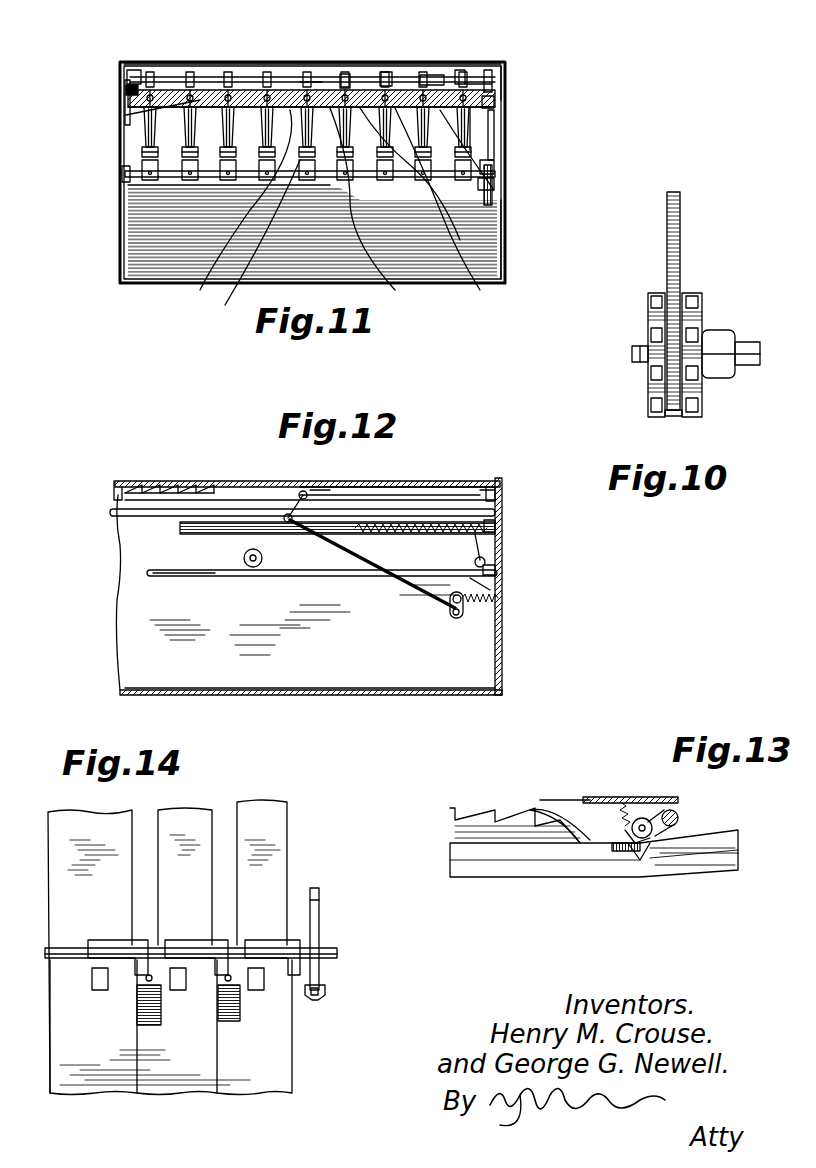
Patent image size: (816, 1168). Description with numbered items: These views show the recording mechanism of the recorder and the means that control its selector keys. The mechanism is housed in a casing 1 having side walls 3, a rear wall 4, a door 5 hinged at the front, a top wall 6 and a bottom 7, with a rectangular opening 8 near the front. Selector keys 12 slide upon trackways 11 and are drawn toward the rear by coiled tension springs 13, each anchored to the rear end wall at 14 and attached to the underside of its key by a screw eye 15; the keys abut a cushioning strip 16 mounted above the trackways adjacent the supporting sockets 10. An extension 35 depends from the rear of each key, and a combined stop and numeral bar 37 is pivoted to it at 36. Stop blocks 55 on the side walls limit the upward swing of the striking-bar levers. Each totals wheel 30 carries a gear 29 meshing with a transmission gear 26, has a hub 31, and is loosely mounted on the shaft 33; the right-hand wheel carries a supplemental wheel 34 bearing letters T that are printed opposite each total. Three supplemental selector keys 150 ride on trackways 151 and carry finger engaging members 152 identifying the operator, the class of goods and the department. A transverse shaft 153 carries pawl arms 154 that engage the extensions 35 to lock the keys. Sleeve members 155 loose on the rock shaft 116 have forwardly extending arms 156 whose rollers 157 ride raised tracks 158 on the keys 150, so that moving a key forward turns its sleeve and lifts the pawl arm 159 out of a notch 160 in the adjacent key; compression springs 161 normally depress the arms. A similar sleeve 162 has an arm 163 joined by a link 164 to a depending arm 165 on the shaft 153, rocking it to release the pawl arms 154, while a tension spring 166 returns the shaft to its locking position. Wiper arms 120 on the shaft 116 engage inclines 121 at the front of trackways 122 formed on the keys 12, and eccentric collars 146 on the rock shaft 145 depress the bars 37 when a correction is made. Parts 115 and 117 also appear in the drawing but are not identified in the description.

In FIG. 11, the casing 1 is at (128, 283).
In FIG. 12, the casing 1 is at (368, 696).
In FIG. 13, the casing 1 is at (590, 798).
In FIG. 11, the side walls 3 is at (126, 226).
In FIG. 12, the side walls 3 is at (124, 632).
In FIG. 12, the rear wall 4 is at (504, 682).
In FIG. 11, the door 5 is at (503, 248).
In FIG. 11, the top wall 6 is at (190, 89).
In FIG. 12, the top wall 6 is at (275, 485).
In FIG. 13, the top wall 6 is at (615, 797).
In FIG. 11, the bottom 7 is at (250, 246).
In FIG. 12, the bottom 7 is at (282, 697).
In FIG. 12, the rectangular opening 8 is at (198, 492).
In FIG. 12, the supporting sockets 10 is at (500, 492).
In FIG. 11, the trackways 11 is at (180, 128).
In FIG. 11, the selector keys 12 is at (200, 110).
In FIG. 12, the coiled tension springs 13 is at (497, 528).
In FIG. 12, the spring connection on rear end wall 14 is at (498, 515).
In FIG. 12, the screw eyes 15 is at (405, 500).
In FIG. 12, the cushioning strip 16 is at (490, 487).
In FIG. 10, the transmission gear 26 is at (665, 236).
In FIG. 10, the gears 29 is at (670, 416).
In FIG. 10, the totals wheel 30 is at (700, 410).
In FIG. 10, the hub 31 is at (718, 335).
In FIG. 10, the shaft 33 is at (634, 358).
In FIG. 10, the supplemental wheel 34 is at (648, 320).
In FIG. 12, the extension 35 is at (486, 548).
In FIG. 11, the pivotal connection 36 is at (250, 160).
In FIG. 12, the pivotal connection 36 is at (496, 570).
In FIG. 11, the combined stop and numeral bar 37 is at (230, 185).
In FIG. 12, the combined stop and numeral bar 37 is at (150, 574).
In FIG. 11, the stop blocks 55 is at (237, 209).
In FIG. 11, the bar 115 is at (124, 112).
In FIG. 11, the rock shaft 116 is at (250, 80).
In FIG. 12, the rock shaft 116 is at (356, 500).
In FIG. 14, the rock shaft 116 is at (330, 948).
In FIG. 13, the rock shaft 116 is at (676, 814).
In FIG. 11, the frame plate 117 is at (118, 66).
In FIG. 11, the wiper arms 120 is at (145, 84).
In FIG. 11, the inclines 121 is at (125, 92).
In FIG. 11, the trackways 122 is at (200, 90).
In FIG. 12, the rock shaft 145 is at (210, 575).
In FIG. 12, the eccentric collars 146 is at (244, 558).
In FIG. 11, the supplemental selector keys 150 is at (495, 210).
In FIG. 12, the supplemental selector keys 150 is at (116, 505).
In FIG. 14, the supplemental selector keys 150 is at (230, 1098).
In FIG. 13, the supplemental selector keys 150 is at (480, 878).
In FIG. 11, the trackways 151 is at (480, 120).
In FIG. 12, the trackways 151 is at (438, 528).
In FIG. 12, the finger engaging members 152 is at (172, 492).
In FIG. 13, the finger engaging members 152 is at (495, 820).
In FIG. 11, the transverse shaft 153 is at (453, 208).
In FIG. 12, the transverse shaft 153 is at (478, 600).
In FIG. 11, the pawl arms 154 is at (583, 203).
In FIG. 12, the pawl arms 154 is at (470, 592).
In FIG. 11, the sleeve members 155 is at (410, 84).
In FIG. 14, the sleeve members 155 is at (185, 945).
In FIG. 13, the sleeve members 155 is at (650, 822).
In FIG. 11, the forwardly extending arms 156 is at (375, 80).
In FIG. 12, the forwardly extending arms 156 is at (300, 490).
In FIG. 14, the forwardly extending arms 156 is at (70, 948).
In FIG. 11, the rollers 157 is at (345, 80).
In FIG. 12, the rollers 157 is at (290, 512).
In FIG. 14, the rollers 157 is at (100, 990).
In FIG. 13, the rollers 157 is at (612, 825).
In FIG. 11, the raised tracks 158 is at (432, 78).
In FIG. 12, the raised tracks 158 is at (380, 498).
In FIG. 14, the raised tracks 158 is at (245, 808).
In FIG. 13, the raised tracks 158 is at (720, 845).
In FIG. 11, the pawl arms 159 is at (462, 78).
In FIG. 14, the pawl arms 159 is at (140, 1000).
In FIG. 13, the pawl arms 159 is at (618, 852).
In FIG. 11, the notches 160 is at (500, 100).
In FIG. 14, the notches 160 is at (160, 1015).
In FIG. 13, the notches 160 is at (632, 852).
In FIG. 12, the compression springs 161 is at (312, 490).
In FIG. 14, the compression springs 161 is at (270, 945).
In FIG. 13, the compression springs 161 is at (638, 806).
In FIG. 11, the sleeve 162 is at (500, 66).
In FIG. 14, the sleeve 162 is at (290, 940).
In FIG. 11, the arm 163 is at (502, 82).
In FIG. 12, the arm 163 is at (125, 517).
In FIG. 14, the arm 163 is at (322, 964).
In FIG. 11, the link 164 is at (498, 140).
In FIG. 12, the link 164 is at (460, 618).
In FIG. 14, the link 164 is at (320, 918).
In FIG. 11, the depending arm 165 is at (496, 200).
In FIG. 12, the depending arm 165 is at (440, 598).
In FIG. 11, the tension spring 166 is at (497, 184).
In FIG. 12, the tension spring 166 is at (490, 585).